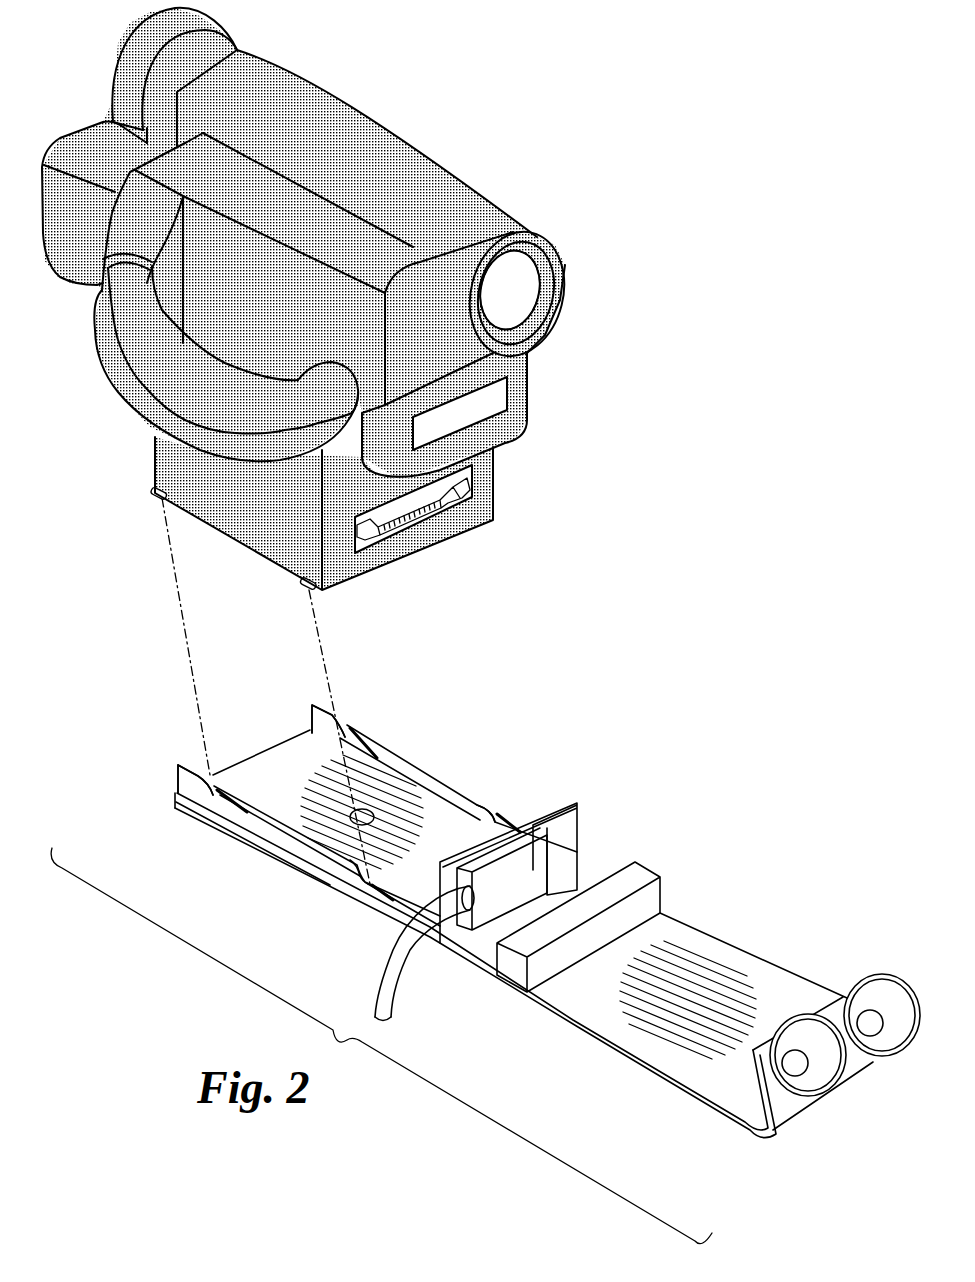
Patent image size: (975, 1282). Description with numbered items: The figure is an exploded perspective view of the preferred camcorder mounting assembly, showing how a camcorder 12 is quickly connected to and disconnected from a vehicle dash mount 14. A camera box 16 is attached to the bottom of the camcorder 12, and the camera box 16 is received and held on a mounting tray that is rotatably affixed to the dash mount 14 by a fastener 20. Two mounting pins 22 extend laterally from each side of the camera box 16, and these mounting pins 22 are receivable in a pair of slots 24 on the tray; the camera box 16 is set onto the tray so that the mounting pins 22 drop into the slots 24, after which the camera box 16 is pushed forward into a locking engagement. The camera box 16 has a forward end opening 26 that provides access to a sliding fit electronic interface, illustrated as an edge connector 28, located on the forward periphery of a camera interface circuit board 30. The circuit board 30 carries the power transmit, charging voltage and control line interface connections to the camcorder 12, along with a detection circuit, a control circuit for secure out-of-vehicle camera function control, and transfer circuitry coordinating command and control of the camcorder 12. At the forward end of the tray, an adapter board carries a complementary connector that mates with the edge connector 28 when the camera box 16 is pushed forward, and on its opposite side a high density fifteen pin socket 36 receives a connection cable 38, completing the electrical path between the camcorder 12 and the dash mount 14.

The camcorder 12 is at (383, 165).
The vehicle dash mount 14 is at (730, 982).
The camera box 16 is at (497, 488).
The fastener 20 is at (366, 814).
The mounting pins 22 is at (150, 491).
The slots 24 is at (210, 777).
The forward end opening 26 is at (443, 520).
The edge connector 28 is at (393, 530).
The camera interface circuit board 30 is at (472, 468).
The socket 36 is at (570, 840).
The connection cable 38 is at (392, 934).